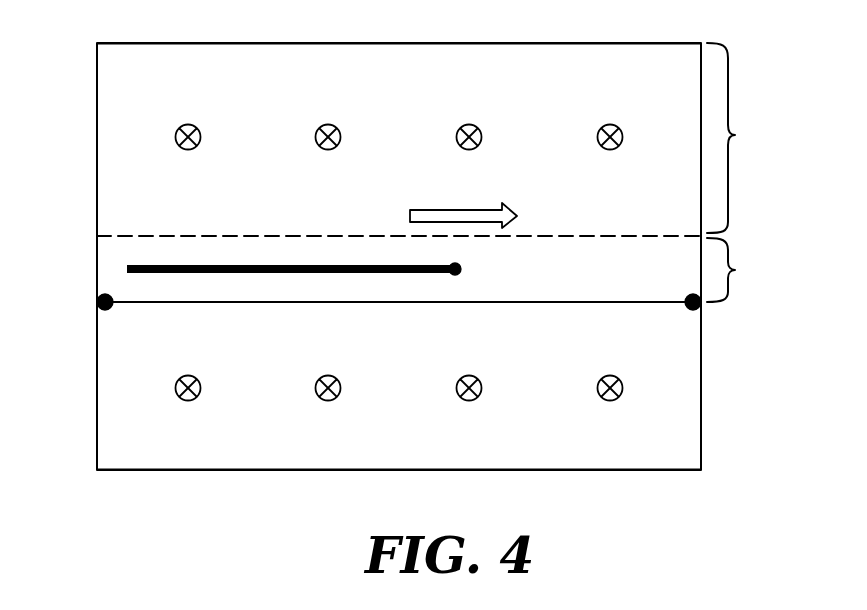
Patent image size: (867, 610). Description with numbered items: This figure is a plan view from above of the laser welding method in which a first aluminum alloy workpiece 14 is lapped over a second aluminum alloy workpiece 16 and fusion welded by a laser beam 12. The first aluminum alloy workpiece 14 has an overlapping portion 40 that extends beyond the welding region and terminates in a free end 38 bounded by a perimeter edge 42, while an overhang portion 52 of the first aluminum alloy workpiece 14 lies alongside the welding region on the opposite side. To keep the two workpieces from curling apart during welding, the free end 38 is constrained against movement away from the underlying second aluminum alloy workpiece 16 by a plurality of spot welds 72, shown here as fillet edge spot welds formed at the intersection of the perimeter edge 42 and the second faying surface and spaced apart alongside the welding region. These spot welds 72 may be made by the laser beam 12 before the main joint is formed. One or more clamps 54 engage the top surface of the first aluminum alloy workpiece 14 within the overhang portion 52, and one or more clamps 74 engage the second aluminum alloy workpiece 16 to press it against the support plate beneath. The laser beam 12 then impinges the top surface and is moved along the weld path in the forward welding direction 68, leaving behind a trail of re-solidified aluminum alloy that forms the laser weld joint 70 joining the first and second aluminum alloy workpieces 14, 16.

The laser beam 12 is at (462, 271).
The first aluminum alloy workpiece 14 is at (670, 91).
The second aluminum alloy workpiece 16 is at (682, 456).
The free end 38 is at (322, 298).
The overlapping portion 40 is at (768, 284).
The perimeter edge 42 is at (360, 303).
The overhang portion 52 is at (768, 149).
The clamps 54 is at (197, 128).
The forward welding direction 68 is at (457, 214).
The laser weld joint 70 is at (285, 265).
The spot welds 72 is at (98, 298).
The clamps 74 is at (197, 397).